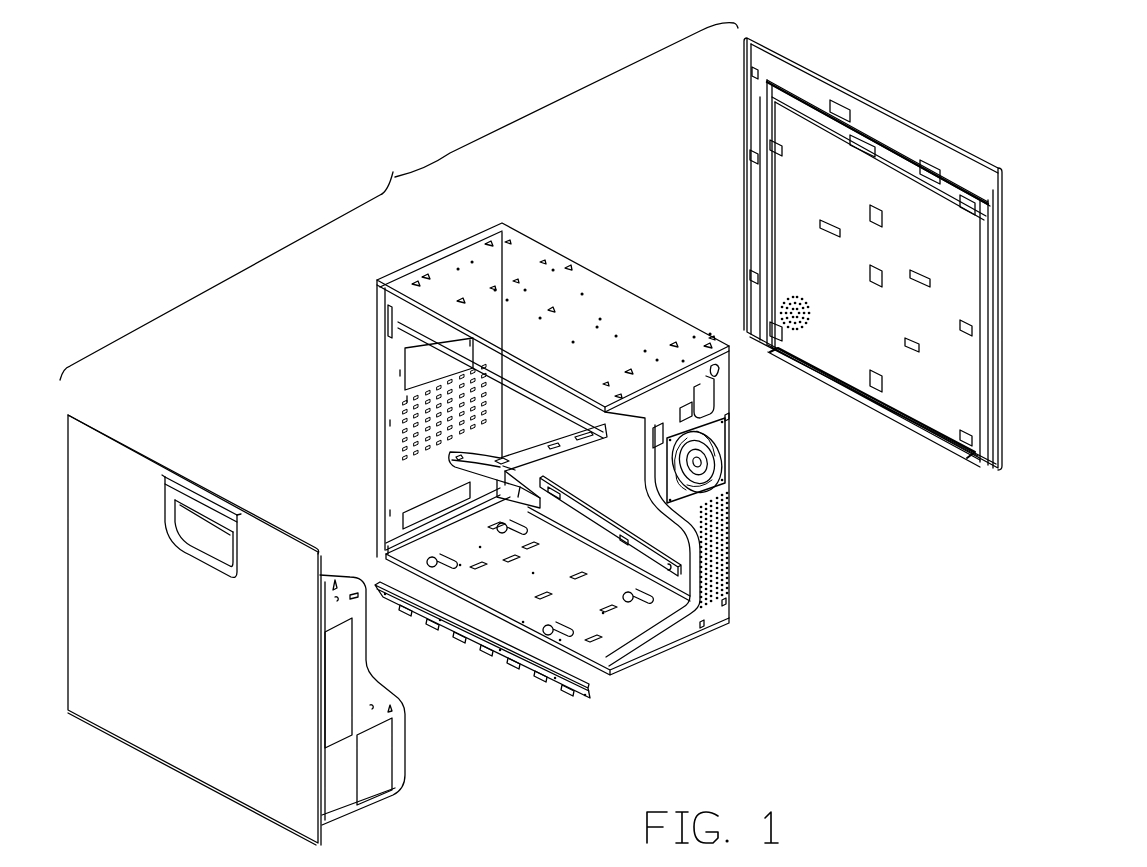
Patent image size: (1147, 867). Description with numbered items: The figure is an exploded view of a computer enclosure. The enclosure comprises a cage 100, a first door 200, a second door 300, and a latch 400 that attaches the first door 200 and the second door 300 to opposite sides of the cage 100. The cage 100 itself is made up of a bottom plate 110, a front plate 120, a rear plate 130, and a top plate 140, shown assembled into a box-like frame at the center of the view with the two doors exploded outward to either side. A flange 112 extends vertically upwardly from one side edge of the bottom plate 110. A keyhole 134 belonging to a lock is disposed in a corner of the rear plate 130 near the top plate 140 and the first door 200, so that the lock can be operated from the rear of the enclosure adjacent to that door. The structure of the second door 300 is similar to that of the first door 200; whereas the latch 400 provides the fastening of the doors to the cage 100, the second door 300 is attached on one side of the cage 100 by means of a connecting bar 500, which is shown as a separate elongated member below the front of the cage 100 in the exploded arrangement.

The cage 100 is at (480, 227).
The bottom plate 110 is at (618, 635).
The flange 112 is at (662, 583).
The front plate 120 is at (376, 375).
The rear plate 130 is at (702, 502).
The keyhole 134 is at (717, 376).
The top plate 140 is at (618, 307).
The first door 200 is at (1008, 256).
The second door 300 is at (120, 425).
The latch 400 is at (443, 474).
The connecting bar 500 is at (525, 688).